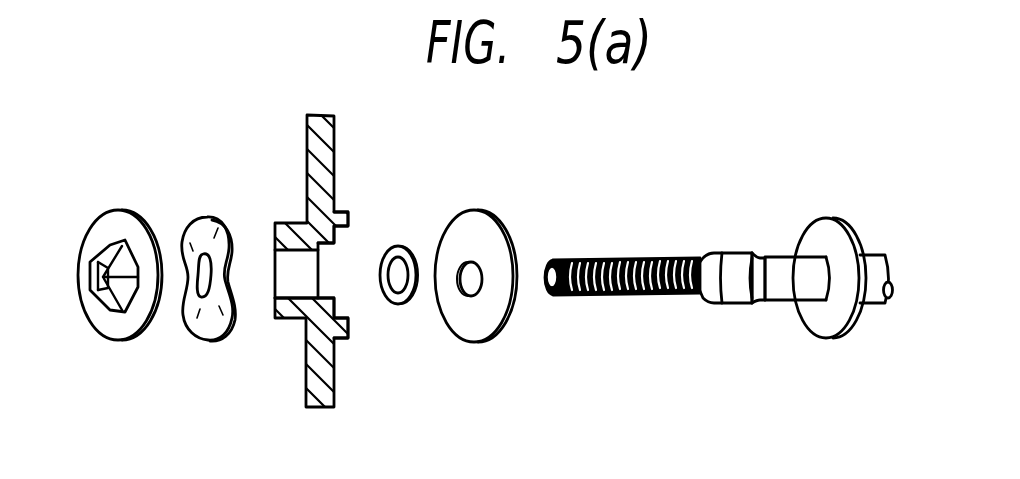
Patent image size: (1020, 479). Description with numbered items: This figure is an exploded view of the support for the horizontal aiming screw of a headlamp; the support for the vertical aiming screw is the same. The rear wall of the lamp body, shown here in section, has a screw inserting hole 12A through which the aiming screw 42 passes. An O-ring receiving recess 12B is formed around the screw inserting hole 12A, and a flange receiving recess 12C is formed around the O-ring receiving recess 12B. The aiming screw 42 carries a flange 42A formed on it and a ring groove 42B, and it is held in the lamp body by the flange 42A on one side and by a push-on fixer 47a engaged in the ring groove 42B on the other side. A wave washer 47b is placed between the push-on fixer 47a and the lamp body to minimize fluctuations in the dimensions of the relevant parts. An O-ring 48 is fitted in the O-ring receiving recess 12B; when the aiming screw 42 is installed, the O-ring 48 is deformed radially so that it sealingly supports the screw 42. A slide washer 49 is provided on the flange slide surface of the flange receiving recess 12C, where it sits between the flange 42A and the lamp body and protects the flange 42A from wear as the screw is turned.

The push-on fixer 47a is at (118, 210).
The wave washer 47b is at (207, 227).
The screw inserting hole 12A is at (293, 297).
The O-ring receiving recess 12B is at (320, 300).
The flange receiving recess 12C is at (333, 238).
The O-ring 48 is at (397, 247).
The slide washer 49 is at (477, 218).
The aiming screw 42 is at (719, 212).
The flange 42A is at (828, 230).
The ring groove 42B is at (757, 262).